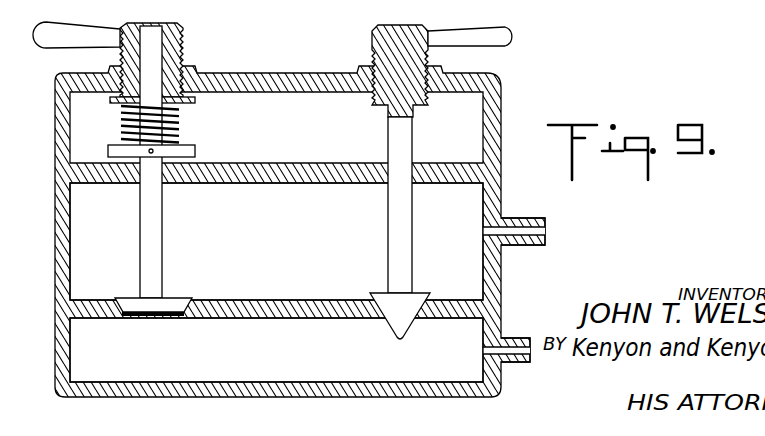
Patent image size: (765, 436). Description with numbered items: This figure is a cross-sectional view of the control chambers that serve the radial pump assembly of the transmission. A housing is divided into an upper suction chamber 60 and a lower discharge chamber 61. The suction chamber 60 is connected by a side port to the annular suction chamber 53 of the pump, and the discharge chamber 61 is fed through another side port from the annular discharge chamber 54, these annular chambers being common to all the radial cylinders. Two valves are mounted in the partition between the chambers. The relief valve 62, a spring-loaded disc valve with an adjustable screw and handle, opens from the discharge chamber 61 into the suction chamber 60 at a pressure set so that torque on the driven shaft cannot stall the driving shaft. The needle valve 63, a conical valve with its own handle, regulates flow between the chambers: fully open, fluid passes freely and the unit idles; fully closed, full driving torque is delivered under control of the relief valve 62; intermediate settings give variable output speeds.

The annular suction chamber 53 is at (553, 231).
The annular discharge chamber 54 is at (483, 352).
The suction chamber 60 is at (293, 281).
The discharge chamber 61 is at (292, 345).
The relief valve 62 is at (155, 229).
The needle valve 63 is at (405, 242).